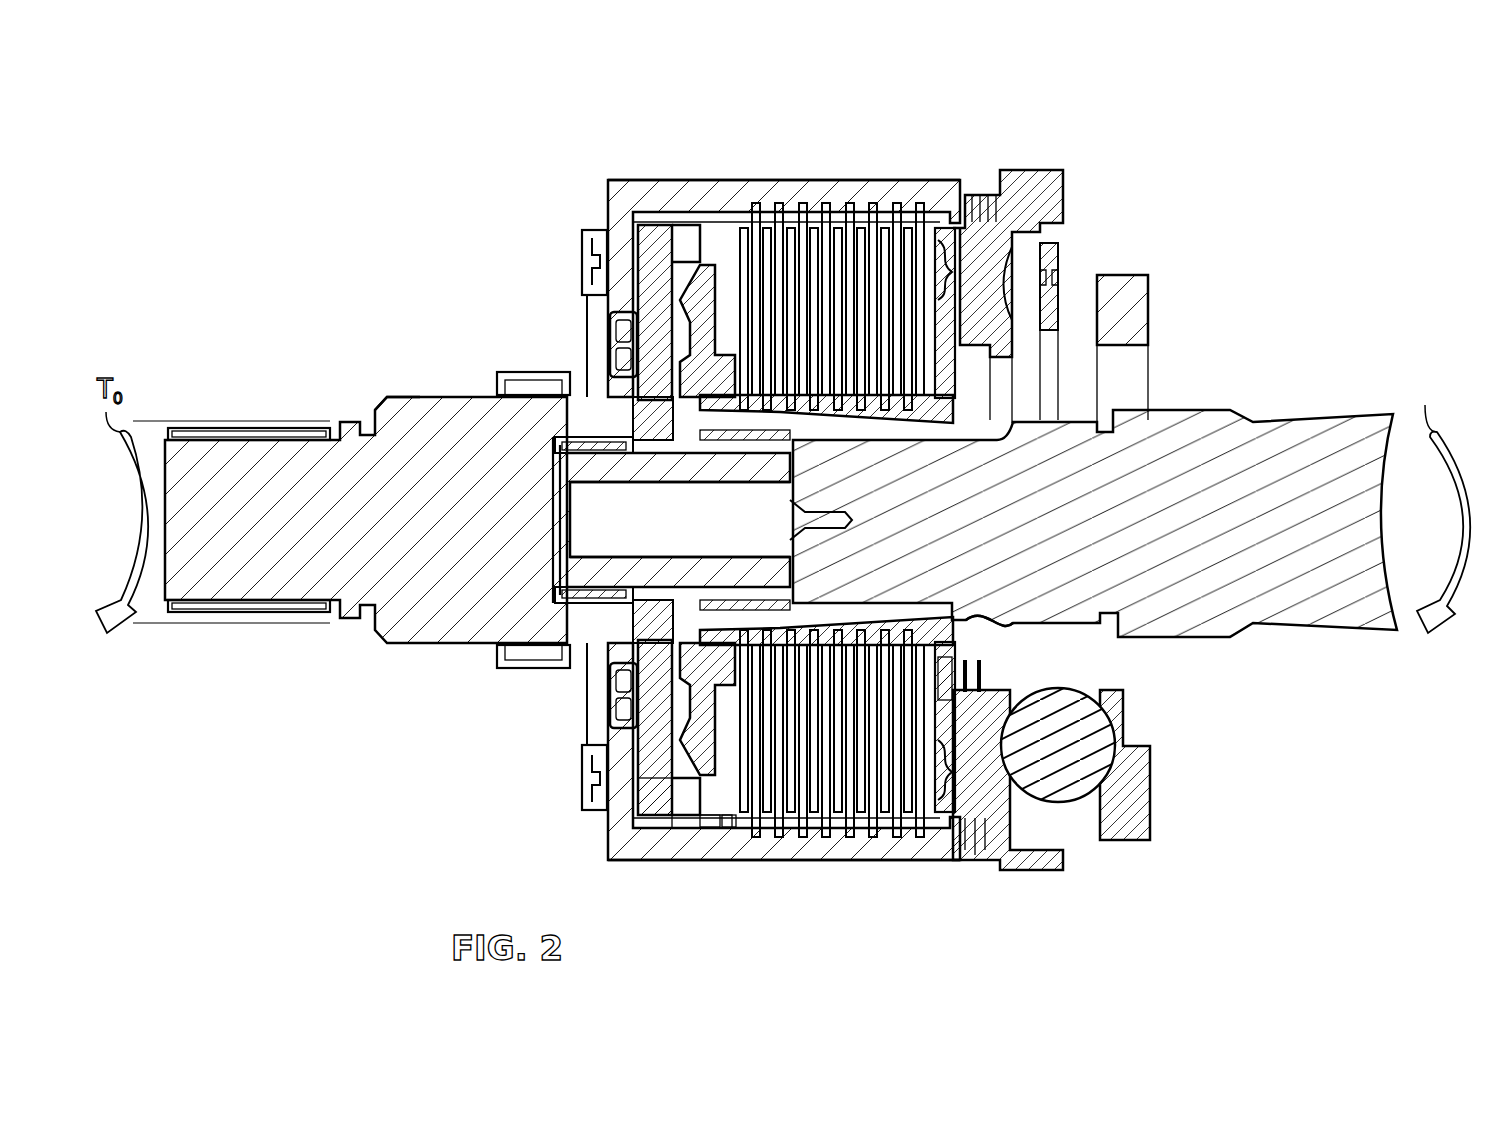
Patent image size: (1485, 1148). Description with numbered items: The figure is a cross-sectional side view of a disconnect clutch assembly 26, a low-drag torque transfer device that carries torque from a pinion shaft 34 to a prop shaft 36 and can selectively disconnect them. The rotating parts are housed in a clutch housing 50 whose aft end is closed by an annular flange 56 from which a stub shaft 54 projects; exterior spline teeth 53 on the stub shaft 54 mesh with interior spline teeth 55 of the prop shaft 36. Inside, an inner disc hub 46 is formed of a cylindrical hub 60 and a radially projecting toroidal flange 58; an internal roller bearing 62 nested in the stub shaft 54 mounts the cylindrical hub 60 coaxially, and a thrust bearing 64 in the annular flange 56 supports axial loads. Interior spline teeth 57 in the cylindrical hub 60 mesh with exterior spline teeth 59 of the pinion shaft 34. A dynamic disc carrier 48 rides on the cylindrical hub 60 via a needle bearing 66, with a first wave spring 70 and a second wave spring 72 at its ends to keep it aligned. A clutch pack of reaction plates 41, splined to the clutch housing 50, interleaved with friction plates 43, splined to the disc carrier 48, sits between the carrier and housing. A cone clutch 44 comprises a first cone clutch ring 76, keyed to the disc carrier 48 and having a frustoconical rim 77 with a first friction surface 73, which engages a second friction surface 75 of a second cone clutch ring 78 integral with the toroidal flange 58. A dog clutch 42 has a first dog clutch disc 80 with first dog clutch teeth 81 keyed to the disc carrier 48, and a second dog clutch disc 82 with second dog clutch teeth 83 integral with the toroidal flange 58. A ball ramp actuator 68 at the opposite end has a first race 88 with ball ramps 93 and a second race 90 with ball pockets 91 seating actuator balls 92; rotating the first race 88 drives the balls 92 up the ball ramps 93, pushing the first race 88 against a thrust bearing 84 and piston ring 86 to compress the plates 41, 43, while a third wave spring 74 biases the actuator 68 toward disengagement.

The disconnect clutch assembly 26 is at (262, 212).
The pinion shaft 34 is at (1297, 412).
The prop shaft 36 is at (147, 422).
The reaction plates 41 is at (917, 840).
The dog clutch 42 is at (686, 862).
The friction plates 43 is at (887, 216).
The cone clutch 44 is at (640, 250).
The inner disc hub 46 is at (630, 623).
The dynamic disc carrier 48 is at (388, 396).
The clutch housing 50 is at (622, 172).
The exterior spline teeth 53 is at (287, 437).
The stub shaft 54 is at (400, 393).
The interior spline teeth 55 is at (229, 443).
The annular flange 56 is at (608, 183).
The interior spline teeth 57 is at (865, 587).
The toroidal flange 58 is at (637, 743).
The exterior spline teeth 59 is at (905, 600).
The cylindrical hub 60 is at (985, 625).
The internal roller bearing 62 is at (528, 628).
The thrust bearing 64 is at (618, 692).
The needle bearing 66 is at (723, 268).
The ball ramp actuator 68 is at (1080, 146).
The first wave spring 70 is at (990, 667).
The second wave spring 72 is at (733, 396).
The first friction surface 73 is at (596, 268).
The third wave spring 74 is at (977, 835).
The second friction surface 75 is at (622, 330).
The first cone clutch ring 76 is at (658, 385).
The frustoconical rim 77 is at (628, 356).
The second cone clutch ring 78 is at (660, 276).
The first dog clutch disc 80 is at (738, 830).
The first set of dog clutch teeth 81 is at (705, 830).
The second dog clutch disc 82 is at (648, 793).
The second set of dog clutch teeth 83 is at (665, 842).
The thrust bearing 84 is at (1013, 832).
The piston ring 86 is at (937, 216).
The first race 88 is at (1065, 195).
The second race 90 is at (1150, 300).
The ball pockets 91 is at (1100, 740).
The actuator balls 92 is at (1085, 380).
The ball ramps 93 is at (1005, 300).